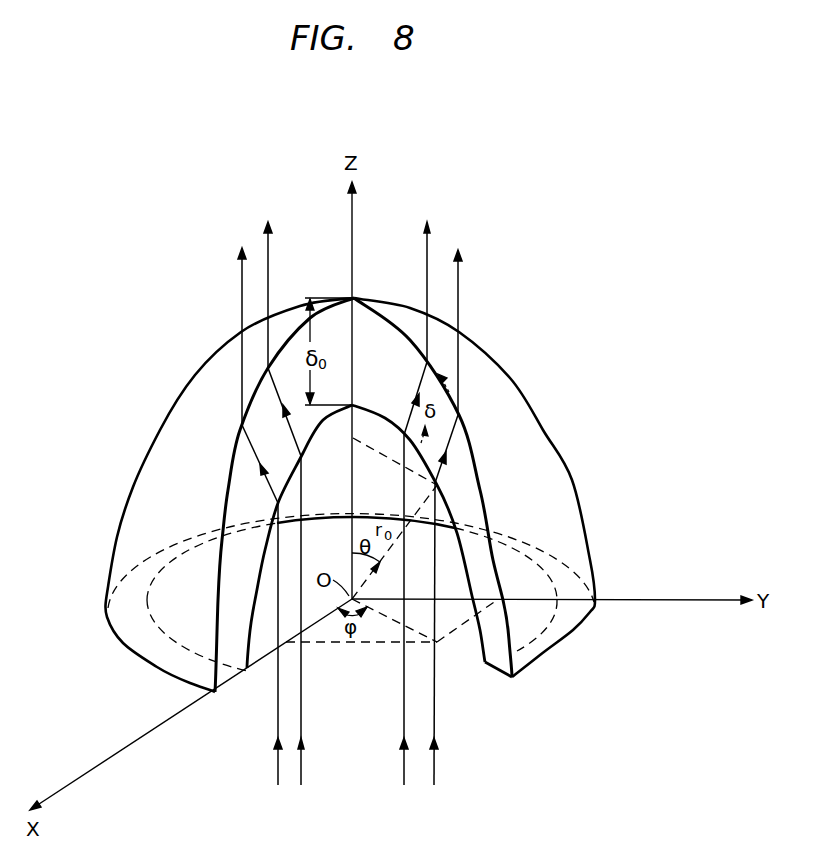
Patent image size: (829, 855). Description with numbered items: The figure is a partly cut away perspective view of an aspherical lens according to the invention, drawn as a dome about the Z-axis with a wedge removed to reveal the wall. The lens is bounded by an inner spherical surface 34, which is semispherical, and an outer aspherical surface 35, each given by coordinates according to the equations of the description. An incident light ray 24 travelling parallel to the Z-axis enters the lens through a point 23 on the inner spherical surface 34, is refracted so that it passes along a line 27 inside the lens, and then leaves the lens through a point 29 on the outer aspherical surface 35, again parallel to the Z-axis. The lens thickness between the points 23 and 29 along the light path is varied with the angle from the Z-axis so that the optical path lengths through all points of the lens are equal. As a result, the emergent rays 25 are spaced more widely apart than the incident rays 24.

The point on the inner spherical surface 23 is at (437, 485).
The incident light ray 24 is at (301, 757).
The emergent ray 25 is at (268, 250).
The line in the lens 27 is at (444, 470).
The point on the outer aspherical surface 29 is at (459, 415).
The inner spherical surface 34 is at (256, 637).
The outer aspherical surface 35 is at (210, 589).